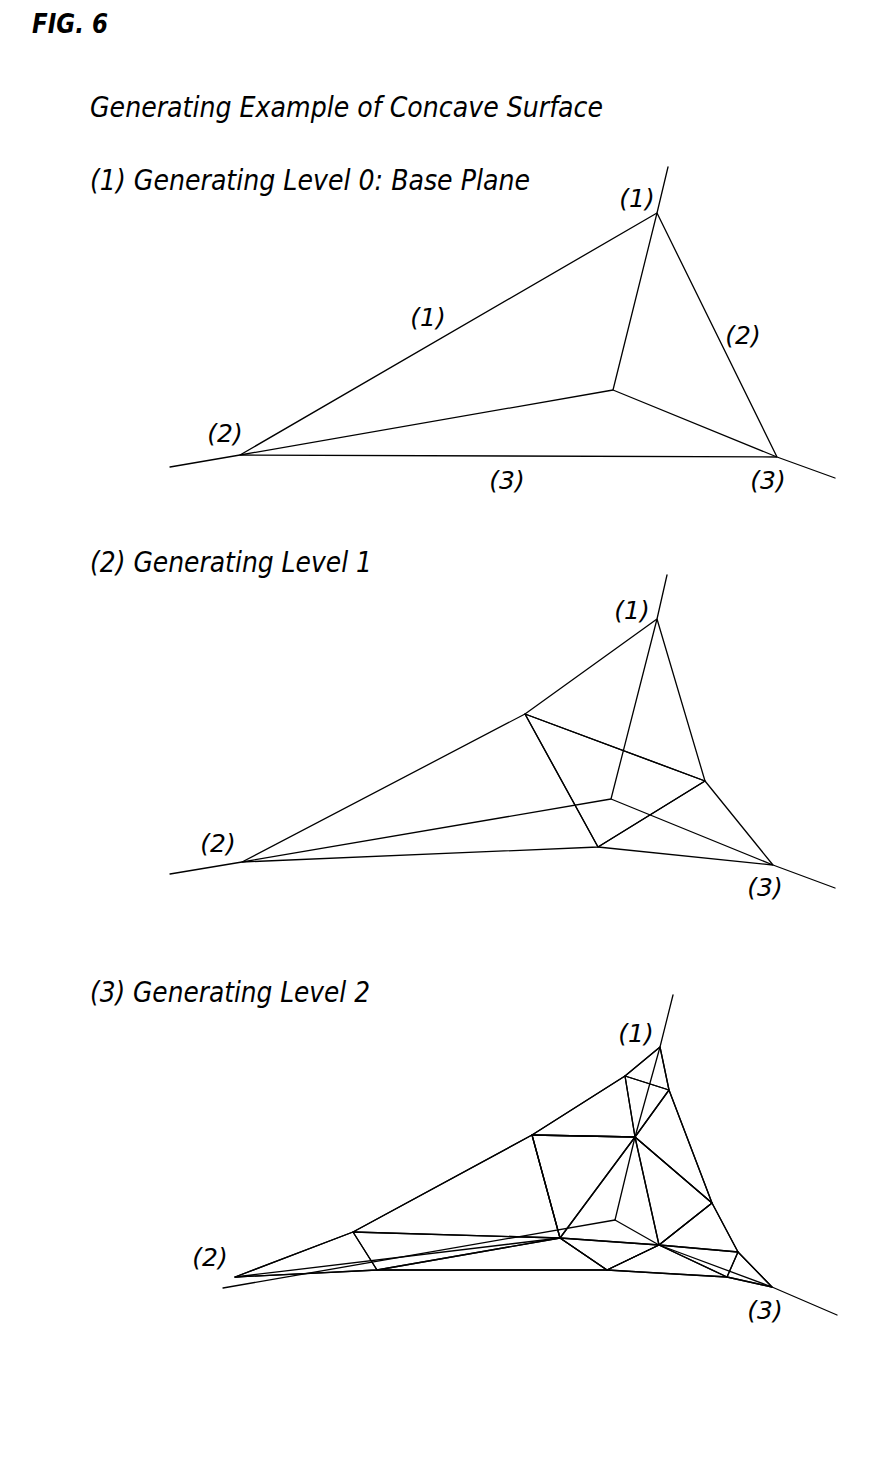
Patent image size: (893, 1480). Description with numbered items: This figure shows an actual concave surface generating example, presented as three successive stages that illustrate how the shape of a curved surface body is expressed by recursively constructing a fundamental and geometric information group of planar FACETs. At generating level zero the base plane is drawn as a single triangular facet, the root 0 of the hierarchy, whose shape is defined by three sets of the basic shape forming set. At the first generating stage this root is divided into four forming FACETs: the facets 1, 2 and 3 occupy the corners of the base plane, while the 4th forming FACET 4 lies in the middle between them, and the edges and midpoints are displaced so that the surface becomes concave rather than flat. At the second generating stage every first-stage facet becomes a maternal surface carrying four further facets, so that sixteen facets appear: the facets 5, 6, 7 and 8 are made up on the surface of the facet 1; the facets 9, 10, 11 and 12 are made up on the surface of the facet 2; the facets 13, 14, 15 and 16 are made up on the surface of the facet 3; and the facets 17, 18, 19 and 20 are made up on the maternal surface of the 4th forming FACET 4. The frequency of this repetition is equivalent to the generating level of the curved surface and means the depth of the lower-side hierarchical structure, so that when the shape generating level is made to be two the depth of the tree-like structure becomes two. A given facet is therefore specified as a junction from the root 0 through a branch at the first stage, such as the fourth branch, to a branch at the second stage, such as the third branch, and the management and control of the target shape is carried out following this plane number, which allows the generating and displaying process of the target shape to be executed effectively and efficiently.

The root 0 is at (502, 322).
The forming FACET 1 is at (615, 700).
The forming FACET 2 is at (420, 788).
The forming FACET 3 is at (685, 823).
The 4th forming FACET 4 is at (615, 780).
The forming FACET 5 is at (666, 1072).
The forming FACET 6 is at (583, 1106).
The forming FACET 7 is at (673, 1146).
The forming FACET 8 is at (622, 1076).
The forming FACET 9 is at (456, 1186).
The forming FACET 10 is at (320, 1250).
The forming FACET 11 is at (492, 1254).
The forming FACET 12 is at (372, 1235).
The forming FACET 13 is at (698, 1227).
The forming FACET 14 is at (667, 1267).
The forming FACET 15 is at (753, 1270).
The forming FACET 16 is at (717, 1257).
The forming FACET 17 is at (604, 1272).
The forming FACET 18 is at (673, 1191).
The forming FACET 19 is at (583, 1186).
The forming FACET 20 is at (609, 1191).